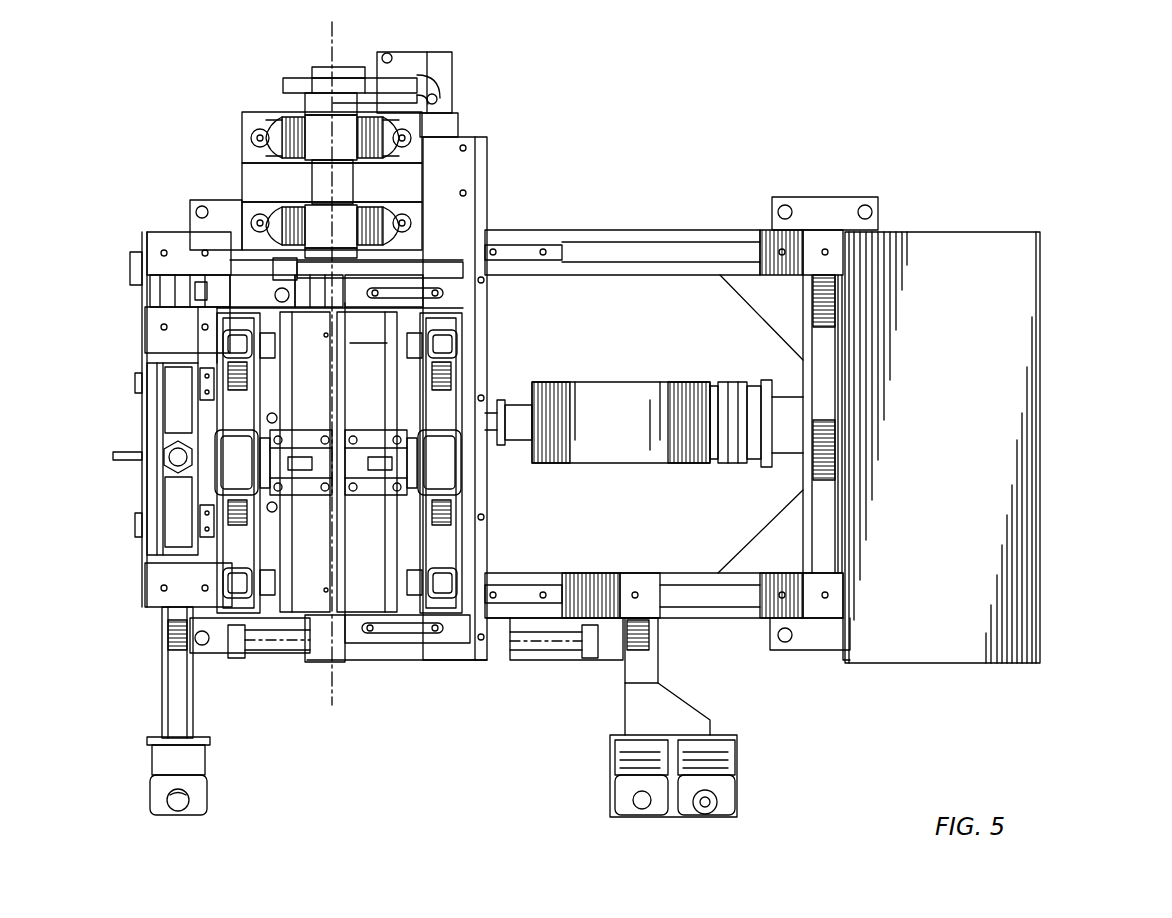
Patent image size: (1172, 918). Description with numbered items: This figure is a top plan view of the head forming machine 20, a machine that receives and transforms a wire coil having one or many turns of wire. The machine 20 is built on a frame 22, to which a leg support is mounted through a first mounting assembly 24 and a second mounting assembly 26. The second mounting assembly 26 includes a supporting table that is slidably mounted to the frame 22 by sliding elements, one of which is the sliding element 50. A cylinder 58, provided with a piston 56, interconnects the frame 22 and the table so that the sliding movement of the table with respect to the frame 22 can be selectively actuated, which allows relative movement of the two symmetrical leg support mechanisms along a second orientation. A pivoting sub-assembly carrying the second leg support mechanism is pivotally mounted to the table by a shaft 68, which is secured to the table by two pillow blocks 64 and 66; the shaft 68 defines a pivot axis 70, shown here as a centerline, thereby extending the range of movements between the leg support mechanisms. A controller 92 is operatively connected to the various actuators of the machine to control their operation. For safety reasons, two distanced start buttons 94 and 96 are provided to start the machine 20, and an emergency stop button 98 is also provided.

The head forming machine 20 is at (1000, 168).
The frame 22 is at (676, 222).
The first mounting assembly 24 is at (180, 390).
The second mounting assembly 26 is at (460, 388).
The sliding element 50 is at (520, 245).
The piston 56 is at (497, 430).
The cylinder 58 is at (645, 435).
The pillow block 64 is at (420, 198).
The pillow block 66 is at (390, 127).
The shaft 68 is at (330, 180).
The pivot axis 70 is at (330, 34).
The controller 92 is at (950, 622).
The start button 94 is at (180, 800).
The start button 96 is at (640, 805).
The emergency stop button 98 is at (705, 803).